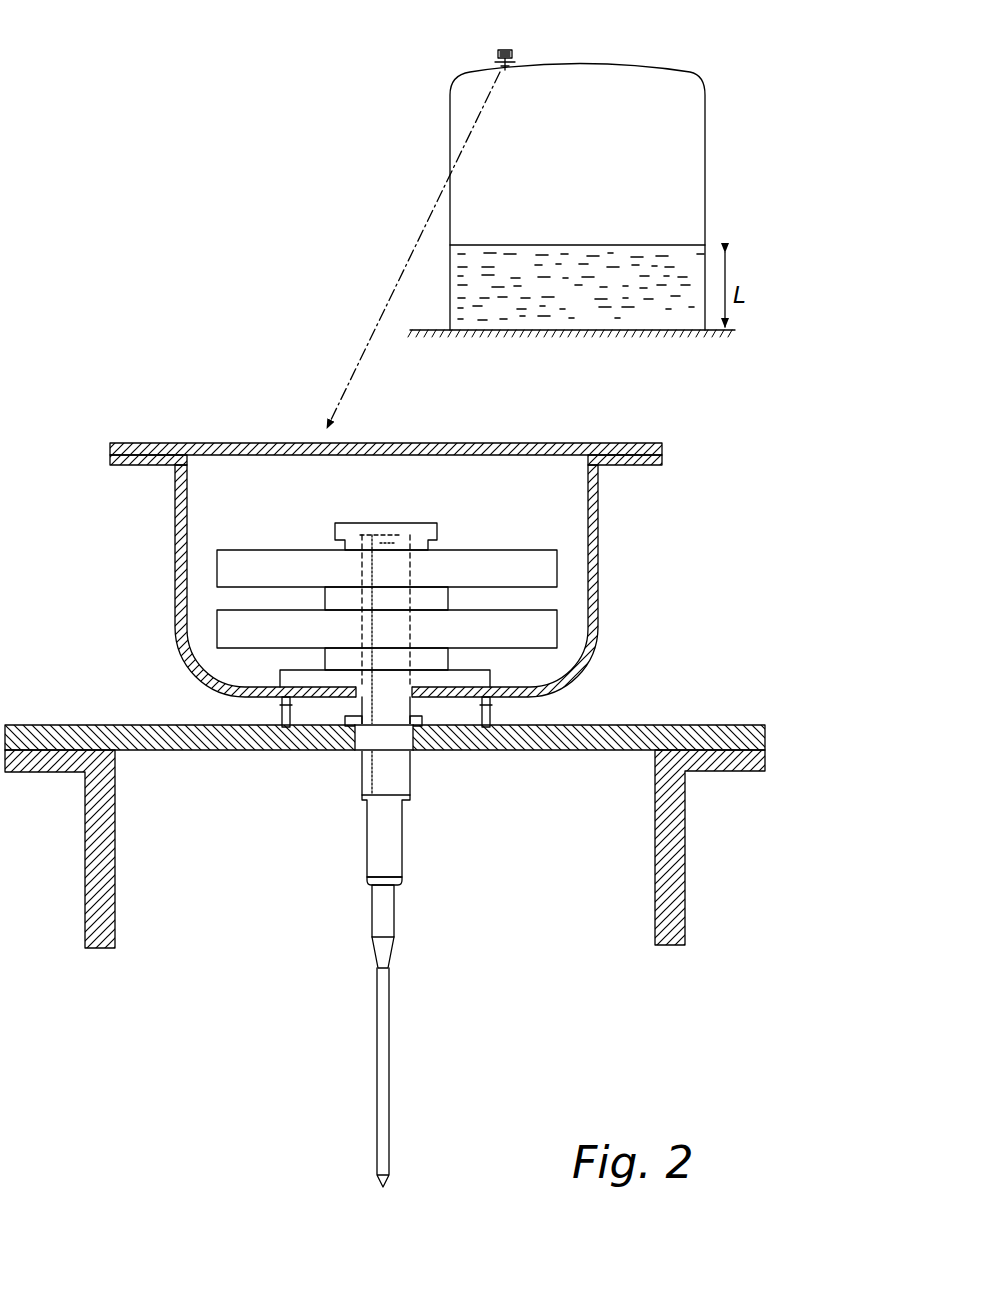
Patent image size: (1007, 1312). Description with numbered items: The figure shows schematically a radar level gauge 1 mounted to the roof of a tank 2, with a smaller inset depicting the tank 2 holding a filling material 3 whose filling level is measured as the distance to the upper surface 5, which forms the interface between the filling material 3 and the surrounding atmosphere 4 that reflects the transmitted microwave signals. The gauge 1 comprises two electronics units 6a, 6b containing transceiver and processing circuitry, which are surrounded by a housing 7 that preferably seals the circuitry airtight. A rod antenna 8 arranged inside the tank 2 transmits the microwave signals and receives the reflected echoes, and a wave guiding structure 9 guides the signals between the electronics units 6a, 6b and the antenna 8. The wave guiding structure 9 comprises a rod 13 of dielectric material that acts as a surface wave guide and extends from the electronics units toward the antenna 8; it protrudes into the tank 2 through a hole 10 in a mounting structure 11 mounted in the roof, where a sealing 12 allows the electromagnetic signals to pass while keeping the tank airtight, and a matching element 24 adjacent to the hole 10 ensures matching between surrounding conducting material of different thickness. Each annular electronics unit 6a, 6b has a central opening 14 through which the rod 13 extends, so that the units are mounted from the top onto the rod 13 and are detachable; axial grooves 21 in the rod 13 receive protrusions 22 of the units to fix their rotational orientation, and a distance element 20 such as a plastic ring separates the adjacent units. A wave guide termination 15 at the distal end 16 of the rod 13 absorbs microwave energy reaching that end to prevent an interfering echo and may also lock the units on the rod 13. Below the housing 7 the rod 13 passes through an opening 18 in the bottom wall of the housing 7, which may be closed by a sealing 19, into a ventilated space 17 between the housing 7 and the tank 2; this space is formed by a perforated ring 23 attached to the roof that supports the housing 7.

The radar level gauge 1 is at (528, 36).
The tank 2 is at (85, 830).
The filling material 3 is at (598, 299).
The surrounding atmosphere 4 is at (208, 870).
The upper surface 5 is at (535, 244).
The electronics unit 6a is at (238, 550).
The electronics unit 6b is at (178, 612).
The housing 7 is at (217, 627).
The antenna 8 is at (367, 849).
The wave guiding structure 9 is at (420, 690).
The hole 10 is at (388, 745).
The mounting structure 11 is at (277, 750).
The sealing 12 is at (340, 750).
The rod 13 is at (387, 752).
The opening 14 is at (395, 622).
The wave guide termination 15 is at (336, 532).
The distal end 16 is at (348, 543).
The ventilated space 17 is at (283, 722).
The opening 18 is at (390, 712).
The sealing 19 is at (422, 686).
The distance element 20 is at (448, 590).
The grooves 21 is at (395, 543).
The protrusions 22 is at (362, 575).
The perforated ring 23 is at (490, 710).
The matching element 24 is at (282, 703).